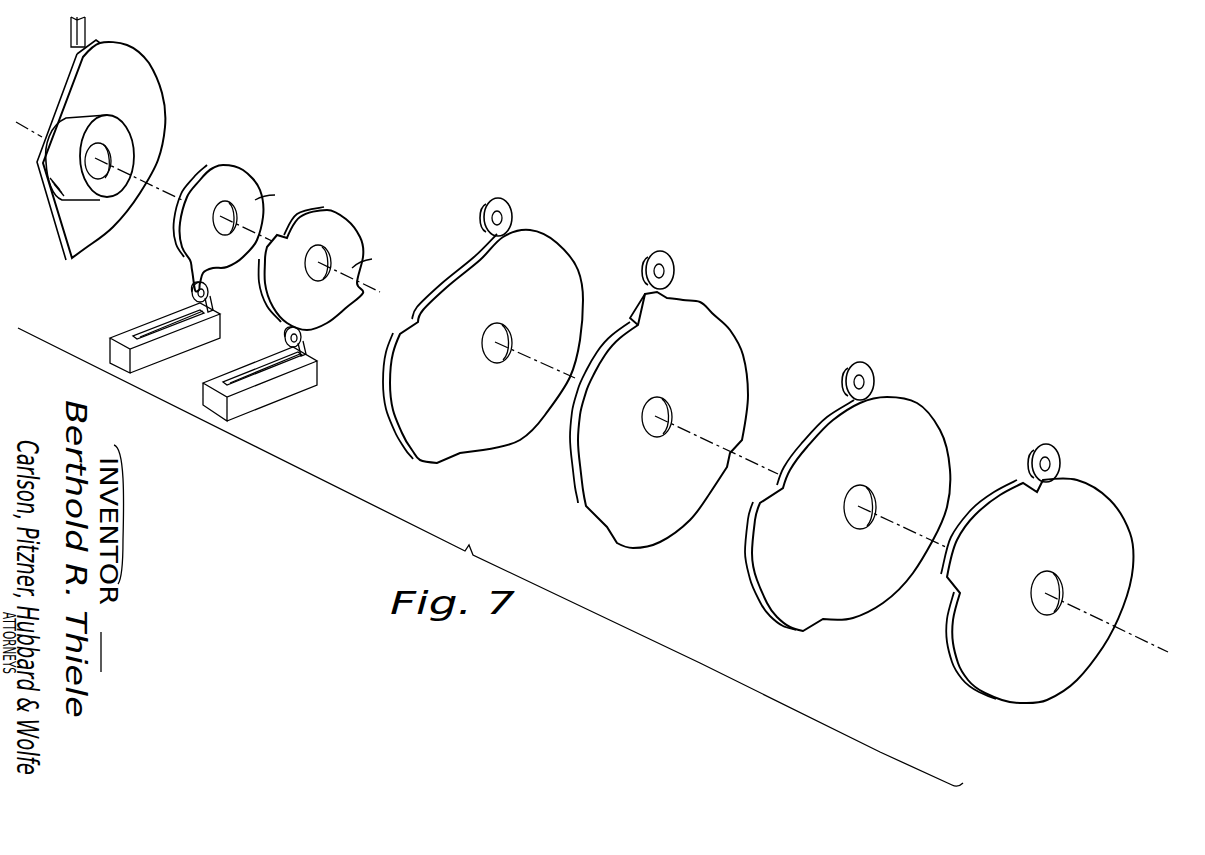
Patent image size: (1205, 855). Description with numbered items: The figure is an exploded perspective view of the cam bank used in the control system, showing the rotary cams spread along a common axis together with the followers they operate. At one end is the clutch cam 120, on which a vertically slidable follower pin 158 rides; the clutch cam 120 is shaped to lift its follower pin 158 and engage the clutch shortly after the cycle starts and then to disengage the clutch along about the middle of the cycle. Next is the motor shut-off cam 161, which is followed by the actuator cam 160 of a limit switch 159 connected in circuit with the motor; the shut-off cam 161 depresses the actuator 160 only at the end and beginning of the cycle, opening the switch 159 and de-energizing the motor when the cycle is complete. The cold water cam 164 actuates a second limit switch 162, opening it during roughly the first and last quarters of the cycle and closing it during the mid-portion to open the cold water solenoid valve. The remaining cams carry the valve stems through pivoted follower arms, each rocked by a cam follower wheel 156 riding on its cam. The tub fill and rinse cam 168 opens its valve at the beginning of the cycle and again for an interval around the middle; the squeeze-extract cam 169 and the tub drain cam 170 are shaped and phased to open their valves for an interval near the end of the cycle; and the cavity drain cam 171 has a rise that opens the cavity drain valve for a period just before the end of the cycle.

The follower pin 158 is at (72, 38).
The clutch cam 120 is at (162, 115).
The shut-off cam 161 is at (186, 254).
The actuator cam 160 is at (210, 296).
The limit switch 159 is at (164, 352).
The second limit switch 162 is at (283, 393).
The cold water cam 164 is at (343, 300).
The cam follower wheel 156 is at (510, 210).
The tub drain cam 170 is at (413, 447).
The fill and rinse cam 168 is at (583, 505).
The squeeze-extract cam 169 is at (775, 600).
The cavity drain cam 171 is at (1127, 537).